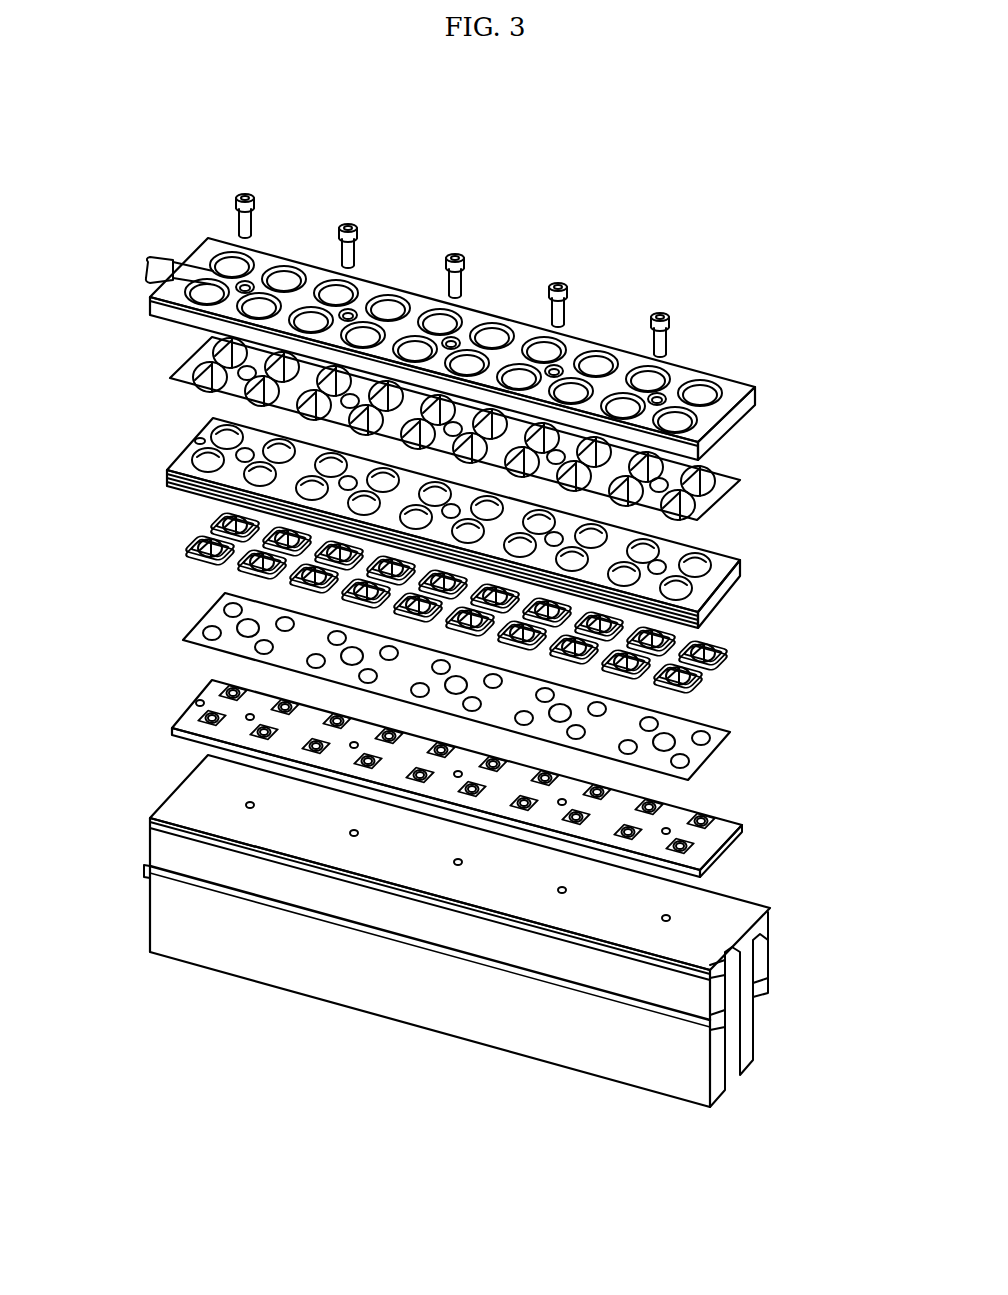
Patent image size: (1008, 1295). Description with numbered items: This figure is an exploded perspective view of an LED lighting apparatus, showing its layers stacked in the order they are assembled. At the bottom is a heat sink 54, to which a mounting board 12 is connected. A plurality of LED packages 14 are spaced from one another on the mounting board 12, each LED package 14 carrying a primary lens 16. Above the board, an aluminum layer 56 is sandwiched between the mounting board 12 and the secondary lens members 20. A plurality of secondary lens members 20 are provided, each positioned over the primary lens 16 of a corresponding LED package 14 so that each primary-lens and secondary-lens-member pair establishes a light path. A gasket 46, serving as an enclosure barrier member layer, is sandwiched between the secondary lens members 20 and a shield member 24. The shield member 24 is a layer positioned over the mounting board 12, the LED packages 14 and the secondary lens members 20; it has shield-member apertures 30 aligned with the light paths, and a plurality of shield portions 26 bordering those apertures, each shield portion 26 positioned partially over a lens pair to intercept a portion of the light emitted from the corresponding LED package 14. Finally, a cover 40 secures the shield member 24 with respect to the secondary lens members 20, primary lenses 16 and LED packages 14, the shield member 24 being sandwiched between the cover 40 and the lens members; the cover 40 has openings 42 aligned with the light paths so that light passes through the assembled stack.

The mounting board 12 is at (479, 763).
The LED package 14 is at (200, 720).
The primary lens 16 is at (233, 690).
The secondary lens member 20 is at (728, 654).
The shield member 24 is at (712, 499).
The shield portion 26 is at (212, 388).
The shield-member aperture 30 is at (207, 385).
The cover 40 is at (712, 419).
The opening 42 is at (703, 392).
The gasket 46 is at (712, 592).
The heat sink 54 is at (650, 1067).
The aluminum layer 56 is at (708, 761).